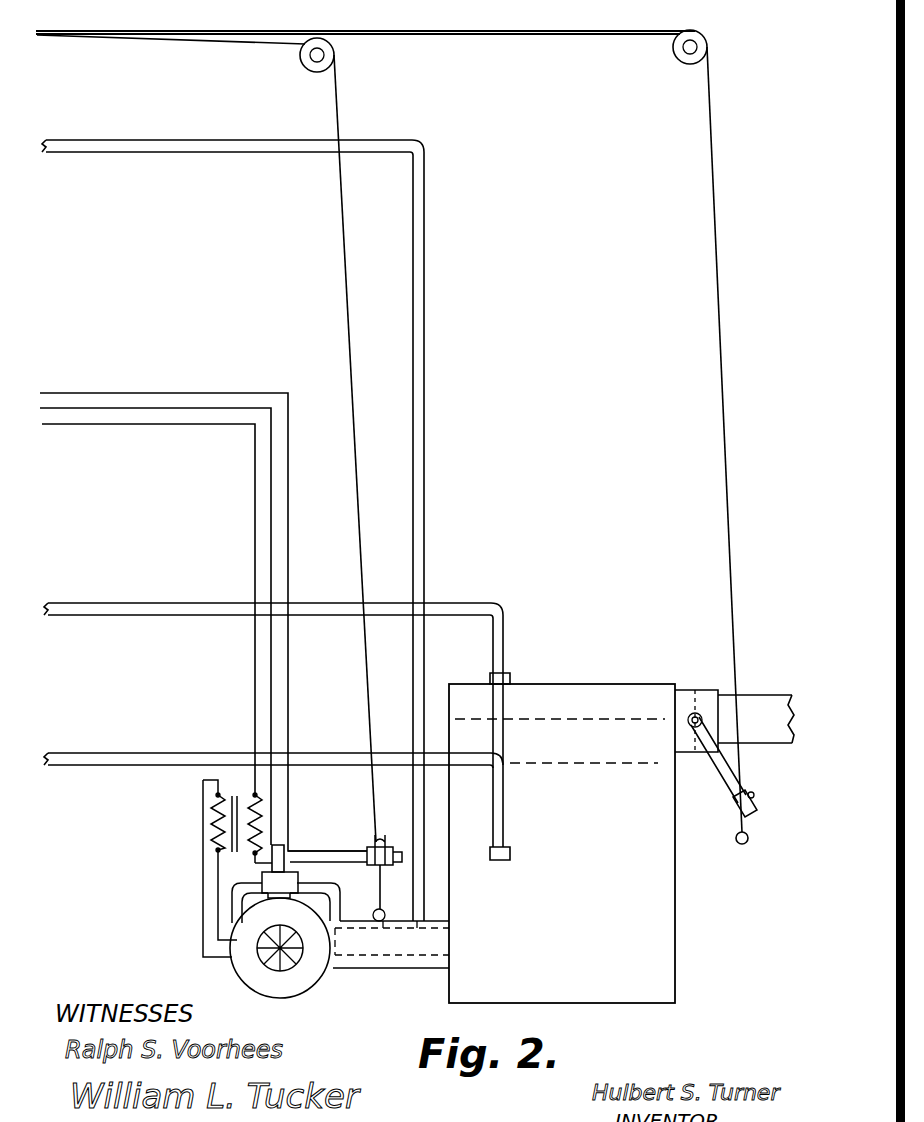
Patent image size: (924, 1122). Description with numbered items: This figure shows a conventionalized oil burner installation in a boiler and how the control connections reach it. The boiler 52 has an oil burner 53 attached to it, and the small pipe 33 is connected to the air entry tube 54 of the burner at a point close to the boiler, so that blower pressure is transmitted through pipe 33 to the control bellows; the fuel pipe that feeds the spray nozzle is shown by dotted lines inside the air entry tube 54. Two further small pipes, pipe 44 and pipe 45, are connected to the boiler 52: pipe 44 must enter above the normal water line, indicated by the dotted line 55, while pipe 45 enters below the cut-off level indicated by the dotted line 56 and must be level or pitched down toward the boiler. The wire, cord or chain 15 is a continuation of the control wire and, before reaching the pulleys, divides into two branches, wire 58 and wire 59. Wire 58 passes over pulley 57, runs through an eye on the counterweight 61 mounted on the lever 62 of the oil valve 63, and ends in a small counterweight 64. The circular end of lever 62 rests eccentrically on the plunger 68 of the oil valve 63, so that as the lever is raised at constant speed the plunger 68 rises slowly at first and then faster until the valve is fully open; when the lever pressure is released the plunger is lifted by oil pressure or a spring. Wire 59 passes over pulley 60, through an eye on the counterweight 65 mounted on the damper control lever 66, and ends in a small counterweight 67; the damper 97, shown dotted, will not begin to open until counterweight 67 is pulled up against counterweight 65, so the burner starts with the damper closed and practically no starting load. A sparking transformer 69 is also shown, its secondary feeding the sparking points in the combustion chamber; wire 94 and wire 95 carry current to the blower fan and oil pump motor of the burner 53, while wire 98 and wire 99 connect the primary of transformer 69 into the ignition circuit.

The wire, cord or chain 15 is at (60, 38).
The wire 58 is at (256, 40).
The pulley 57 is at (309, 66).
The wire 59 is at (520, 34).
The pulley 60 is at (684, 52).
The pipe 33 is at (88, 152).
The wire 94 is at (80, 383).
The wire 95 is at (78, 410).
The wire 98 is at (145, 424).
The pipe 44 is at (83, 606).
The pipe 45 is at (83, 756).
The boiler 52 is at (668, 927).
The dotted line (normal water line) 55 is at (586, 715).
The dotted line (low-water line) 56 is at (651, 766).
The damper 97 is at (700, 690).
The damper control lever 66 is at (726, 781).
The counterweight 65 is at (754, 799).
The small counterweight 67 is at (749, 839).
The sparking transformer 69 is at (232, 798).
The wire 99 is at (258, 863).
The lever 62 is at (330, 847).
The counterweight 61 is at (381, 845).
The plunger 68 is at (300, 878).
The oil valve 63 is at (282, 880).
The small counterweight 64 is at (391, 893).
The oil burner 53 is at (318, 972).
The air entry tube 54 is at (424, 966).